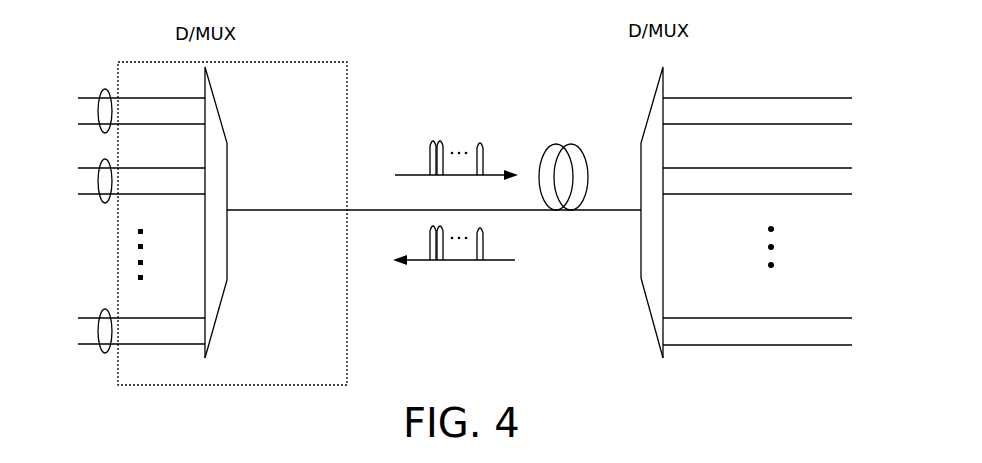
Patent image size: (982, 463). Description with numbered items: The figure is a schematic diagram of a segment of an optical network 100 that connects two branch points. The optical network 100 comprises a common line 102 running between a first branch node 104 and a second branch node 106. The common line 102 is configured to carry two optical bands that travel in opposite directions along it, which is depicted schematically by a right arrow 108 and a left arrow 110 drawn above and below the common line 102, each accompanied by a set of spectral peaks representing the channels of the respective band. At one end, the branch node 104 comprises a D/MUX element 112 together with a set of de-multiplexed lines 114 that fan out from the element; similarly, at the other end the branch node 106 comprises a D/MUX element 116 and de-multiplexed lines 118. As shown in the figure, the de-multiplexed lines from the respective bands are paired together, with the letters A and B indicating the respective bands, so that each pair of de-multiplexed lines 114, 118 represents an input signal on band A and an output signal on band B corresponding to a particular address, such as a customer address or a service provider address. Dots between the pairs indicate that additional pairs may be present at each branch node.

The optical network 100 is at (497, 342).
The common line 102 is at (360, 210).
The branch node 104 is at (230, 99).
The branch node 106 is at (636, 108).
The right arrow 108 is at (415, 175).
The left arrow 110 is at (505, 260).
The D/MUX element 112 is at (222, 293).
The de-multiplexed lines 114 is at (82, 62).
The D/MUX element 116 is at (641, 270).
The de-multiplexed lines 118 is at (713, 352).